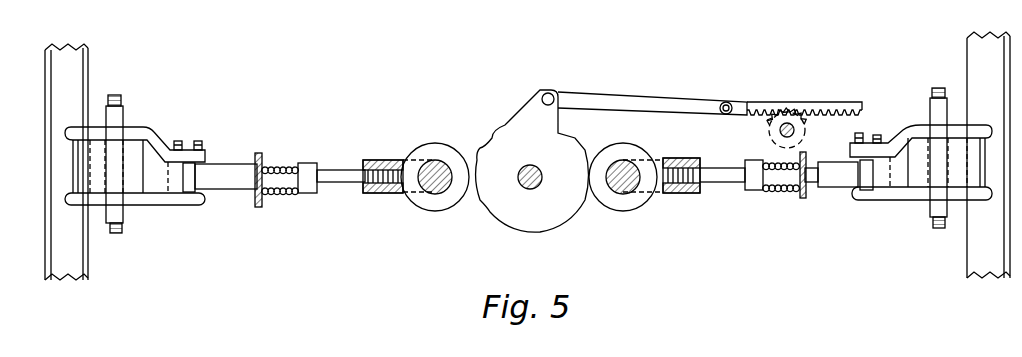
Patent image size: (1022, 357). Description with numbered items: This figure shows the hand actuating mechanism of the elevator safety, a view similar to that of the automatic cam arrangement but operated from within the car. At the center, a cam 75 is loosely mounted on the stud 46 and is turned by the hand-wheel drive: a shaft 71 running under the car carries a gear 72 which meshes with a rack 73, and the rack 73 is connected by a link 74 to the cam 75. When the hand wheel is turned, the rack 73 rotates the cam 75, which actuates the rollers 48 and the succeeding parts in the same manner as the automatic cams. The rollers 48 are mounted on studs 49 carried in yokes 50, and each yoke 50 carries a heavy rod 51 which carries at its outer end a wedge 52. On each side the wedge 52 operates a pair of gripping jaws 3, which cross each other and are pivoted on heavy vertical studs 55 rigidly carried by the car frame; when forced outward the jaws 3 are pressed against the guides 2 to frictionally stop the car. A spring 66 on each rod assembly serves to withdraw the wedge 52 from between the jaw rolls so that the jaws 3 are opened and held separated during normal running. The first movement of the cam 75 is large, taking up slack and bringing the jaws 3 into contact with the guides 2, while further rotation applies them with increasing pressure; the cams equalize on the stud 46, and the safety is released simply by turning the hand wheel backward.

The guides 2 is at (527, 156).
The gripping jaws 3 is at (528, 165).
The stud 46 is at (530, 165).
The rollers 48 is at (436, 147).
The studs 49 is at (430, 192).
The yokes 50 is at (384, 162).
The rod 51 is at (337, 178).
The wedge 52 is at (197, 172).
The vertical studs 55 is at (117, 113).
The spring 66 is at (277, 165).
The shaft 71 is at (795, 130).
The gear 72 is at (767, 120).
The rack 73 is at (783, 102).
The link 74 is at (655, 99).
The cam 75 is at (532, 161).